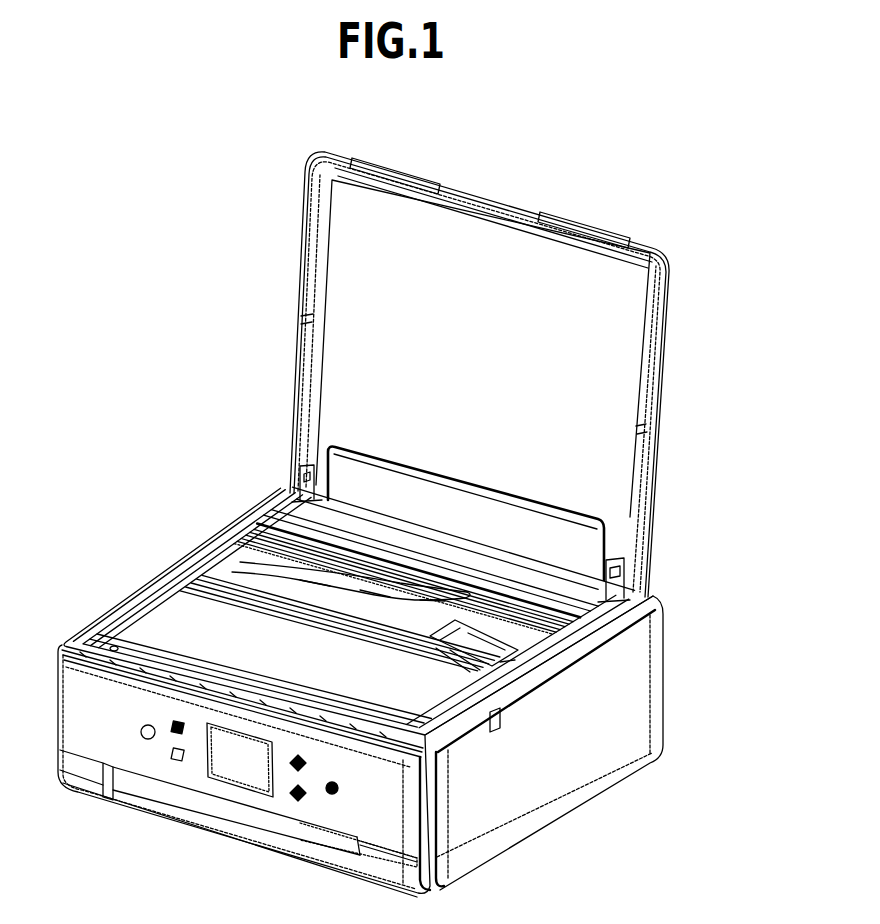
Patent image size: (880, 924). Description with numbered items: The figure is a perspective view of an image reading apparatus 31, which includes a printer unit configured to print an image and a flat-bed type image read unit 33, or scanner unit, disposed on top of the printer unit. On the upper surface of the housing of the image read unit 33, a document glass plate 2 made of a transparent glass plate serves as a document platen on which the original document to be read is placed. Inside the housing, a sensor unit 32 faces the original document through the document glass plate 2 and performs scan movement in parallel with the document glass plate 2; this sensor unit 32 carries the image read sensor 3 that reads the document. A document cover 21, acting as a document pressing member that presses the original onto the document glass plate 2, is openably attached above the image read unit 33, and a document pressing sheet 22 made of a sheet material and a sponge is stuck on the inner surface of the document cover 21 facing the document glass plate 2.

The document glass plate 2 is at (410, 692).
The image read sensor 3 is at (130, 618).
The document cover 21 is at (313, 241).
The document pressing sheet 22 is at (370, 378).
The image reading apparatus 31 is at (665, 707).
The sensor unit 32 is at (198, 578).
The image read unit 33 is at (222, 514).